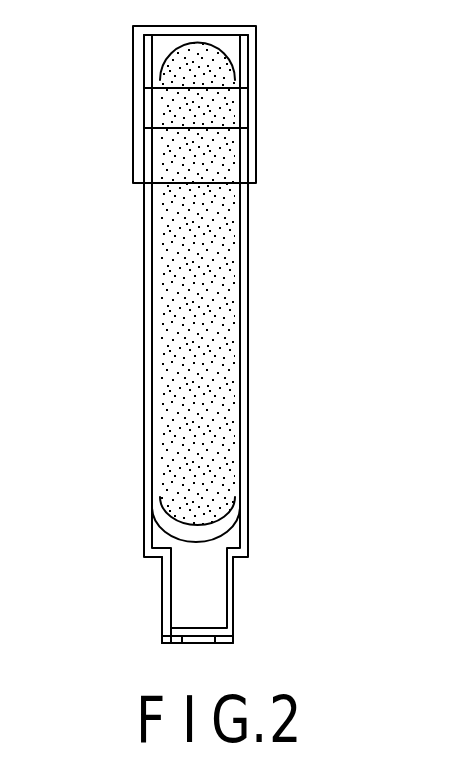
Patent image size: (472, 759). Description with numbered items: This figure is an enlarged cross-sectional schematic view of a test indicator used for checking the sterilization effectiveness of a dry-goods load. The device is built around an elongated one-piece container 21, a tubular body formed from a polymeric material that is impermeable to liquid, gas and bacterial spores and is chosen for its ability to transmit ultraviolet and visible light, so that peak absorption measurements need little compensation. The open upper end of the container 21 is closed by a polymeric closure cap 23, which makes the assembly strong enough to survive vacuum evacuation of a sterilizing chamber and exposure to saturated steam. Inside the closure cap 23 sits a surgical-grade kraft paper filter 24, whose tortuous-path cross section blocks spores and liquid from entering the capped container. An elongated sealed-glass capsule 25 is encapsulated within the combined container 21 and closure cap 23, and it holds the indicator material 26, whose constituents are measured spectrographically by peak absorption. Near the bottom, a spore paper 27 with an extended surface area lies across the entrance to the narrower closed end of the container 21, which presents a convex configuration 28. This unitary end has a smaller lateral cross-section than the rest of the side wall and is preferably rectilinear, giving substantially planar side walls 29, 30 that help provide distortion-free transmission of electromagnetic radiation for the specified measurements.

The elongated one-piece container 21 is at (252, 313).
The closure cap 23 is at (257, 128).
The kraft paper filter 24 is at (252, 63).
The sealed-glass capsule 25 is at (244, 224).
The indicator material 26 is at (228, 388).
The spore paper 27 is at (242, 507).
The convex configuration 28 is at (225, 633).
The planar side wall 29 is at (162, 603).
The planar side wall 30 is at (235, 583).